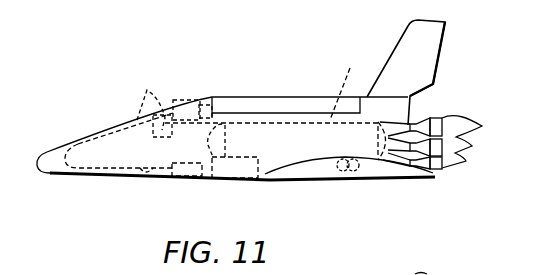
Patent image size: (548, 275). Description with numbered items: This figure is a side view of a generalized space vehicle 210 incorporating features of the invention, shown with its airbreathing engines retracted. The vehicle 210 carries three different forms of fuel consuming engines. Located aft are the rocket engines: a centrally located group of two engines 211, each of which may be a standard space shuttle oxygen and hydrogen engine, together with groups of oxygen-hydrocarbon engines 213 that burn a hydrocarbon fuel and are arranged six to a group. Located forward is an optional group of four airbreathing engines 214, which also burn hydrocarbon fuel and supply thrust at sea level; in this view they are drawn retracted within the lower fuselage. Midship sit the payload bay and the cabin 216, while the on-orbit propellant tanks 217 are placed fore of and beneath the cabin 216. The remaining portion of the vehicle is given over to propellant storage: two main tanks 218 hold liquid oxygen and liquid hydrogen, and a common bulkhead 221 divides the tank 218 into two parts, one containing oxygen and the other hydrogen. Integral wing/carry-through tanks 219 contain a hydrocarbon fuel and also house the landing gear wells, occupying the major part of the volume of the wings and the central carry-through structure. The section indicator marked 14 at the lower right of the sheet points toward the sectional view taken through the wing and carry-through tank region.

The space vehicle 210 is at (285, 90).
The engines 211 is at (434, 117).
The engines 213 is at (472, 132).
The airbreathing engines 214 is at (172, 181).
The cabin 216 is at (190, 98).
The on-orbit propellant tanks 217 is at (139, 107).
The main tanks 218 is at (337, 82).
The integral wing/carry-through tanks 219 is at (257, 181).
The common bulkhead 221 is at (222, 122).
The section indicator 14 is at (365, 274).